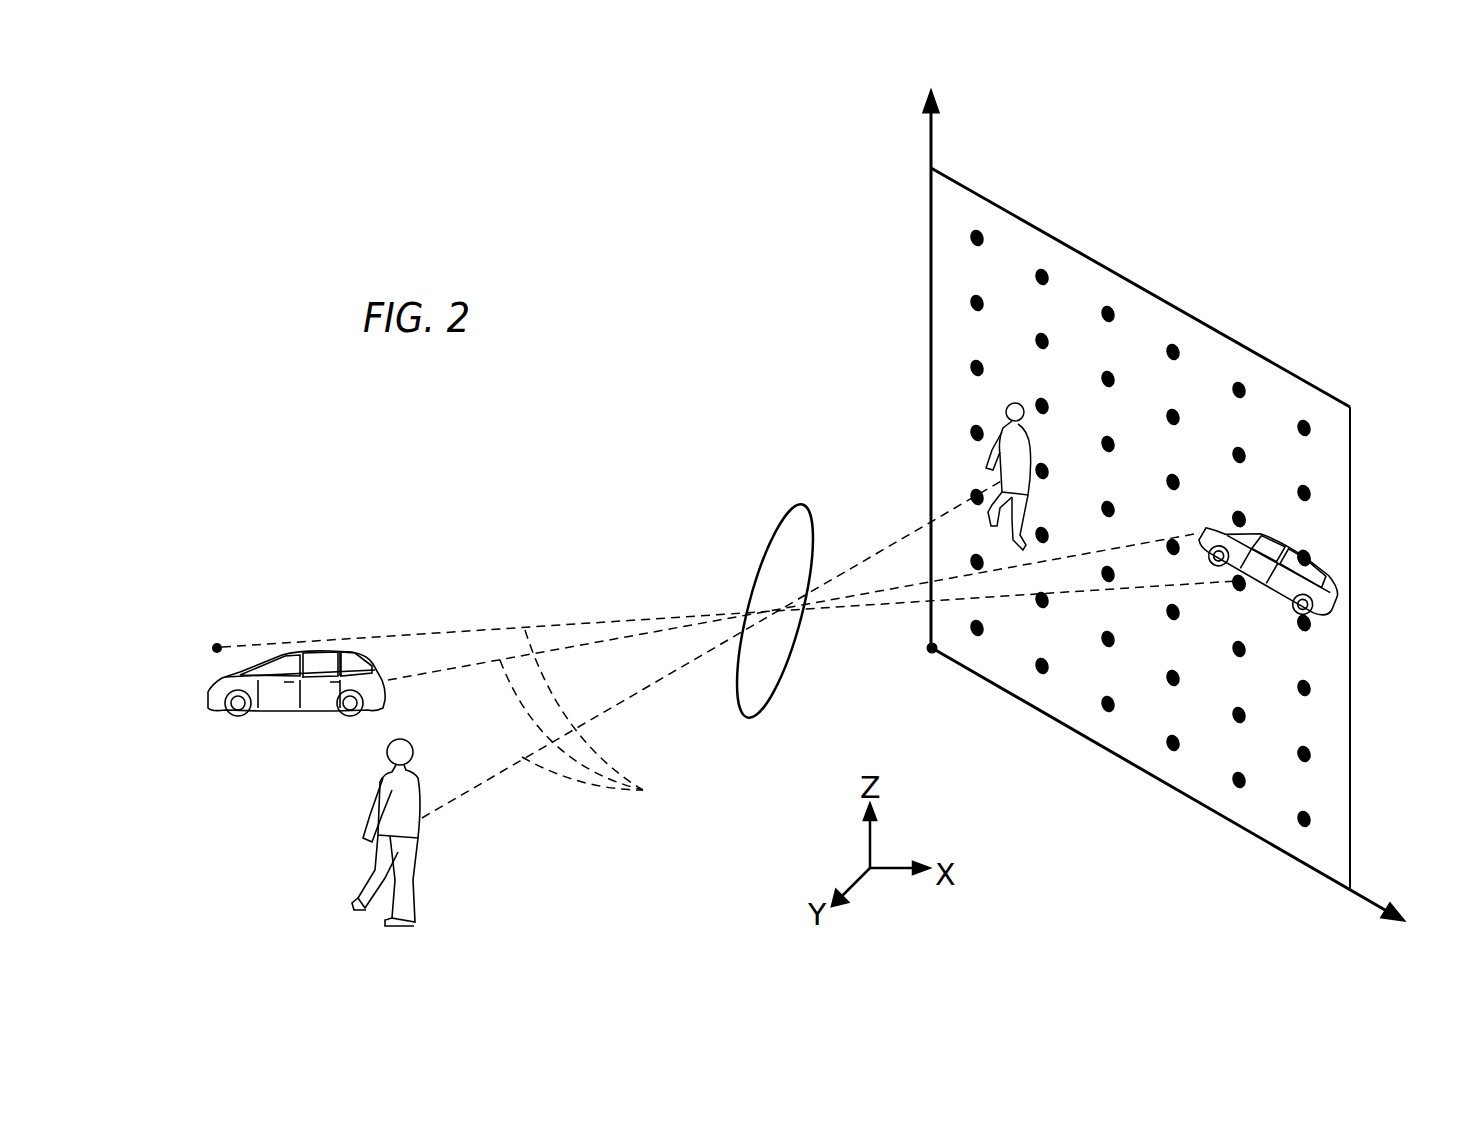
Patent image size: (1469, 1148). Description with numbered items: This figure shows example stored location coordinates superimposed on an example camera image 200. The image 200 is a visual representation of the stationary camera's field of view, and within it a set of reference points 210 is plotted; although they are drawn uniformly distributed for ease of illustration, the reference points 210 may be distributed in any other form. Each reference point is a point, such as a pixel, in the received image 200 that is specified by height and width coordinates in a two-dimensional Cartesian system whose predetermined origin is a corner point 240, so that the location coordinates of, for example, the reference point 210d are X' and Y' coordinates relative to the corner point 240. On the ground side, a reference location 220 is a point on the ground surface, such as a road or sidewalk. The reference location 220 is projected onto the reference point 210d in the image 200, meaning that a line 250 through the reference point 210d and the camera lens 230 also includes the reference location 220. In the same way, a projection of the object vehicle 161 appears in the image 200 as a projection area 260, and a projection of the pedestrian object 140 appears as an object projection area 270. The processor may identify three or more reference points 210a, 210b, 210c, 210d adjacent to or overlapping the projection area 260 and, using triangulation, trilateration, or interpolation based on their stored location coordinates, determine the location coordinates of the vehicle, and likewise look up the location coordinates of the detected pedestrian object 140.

The pedestrian object 140 is at (357, 822).
The object vehicle 161 is at (283, 713).
The image 200 is at (1288, 372).
The reference points 210 is at (1104, 376).
The reference point 210a is at (1243, 514).
The reference point 210b is at (1308, 554).
The reference point 210c is at (1307, 628).
The reference point 210d is at (1243, 588).
The reference location 220 is at (214, 643).
The lens 230 is at (748, 504).
The corner point 240 is at (929, 654).
The line 250 is at (595, 718).
The projection area 260 is at (1333, 592).
The object projection area 270 is at (1000, 432).